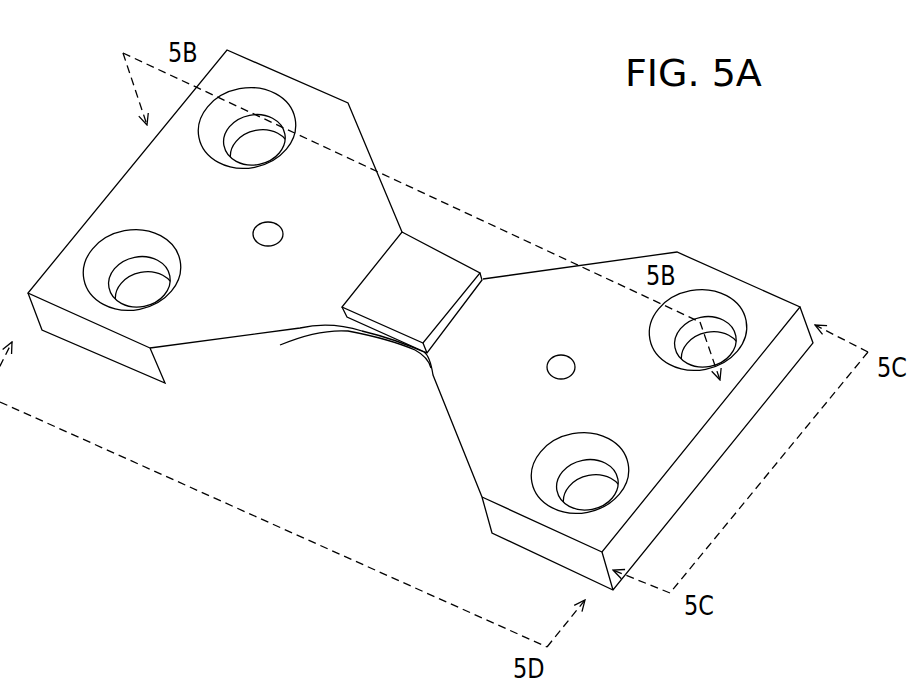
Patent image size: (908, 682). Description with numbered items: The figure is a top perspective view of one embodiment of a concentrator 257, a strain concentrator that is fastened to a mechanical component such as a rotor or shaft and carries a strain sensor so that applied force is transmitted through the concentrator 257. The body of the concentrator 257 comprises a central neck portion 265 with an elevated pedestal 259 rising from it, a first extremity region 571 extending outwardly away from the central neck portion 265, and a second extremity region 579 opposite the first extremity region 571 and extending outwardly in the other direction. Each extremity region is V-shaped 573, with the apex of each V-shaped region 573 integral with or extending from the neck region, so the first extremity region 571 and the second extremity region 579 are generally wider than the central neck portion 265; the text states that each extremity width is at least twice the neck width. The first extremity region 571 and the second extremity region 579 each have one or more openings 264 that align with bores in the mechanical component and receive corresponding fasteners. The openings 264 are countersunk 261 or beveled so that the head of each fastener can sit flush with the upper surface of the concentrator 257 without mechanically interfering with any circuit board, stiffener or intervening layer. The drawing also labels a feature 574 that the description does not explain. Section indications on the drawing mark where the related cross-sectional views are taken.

The concentrator 257 is at (453, 77).
The elevated pedestal 259 is at (382, 297).
The countersink 261 is at (235, 134).
The openings 264 is at (225, 143).
The central neck portion 265 is at (443, 242).
The first extremity region 571 is at (323, 204).
The V-shaped region 573 is at (372, 157).
The protrusion side surface 574 is at (474, 263).
The second extremity region 579 is at (564, 331).